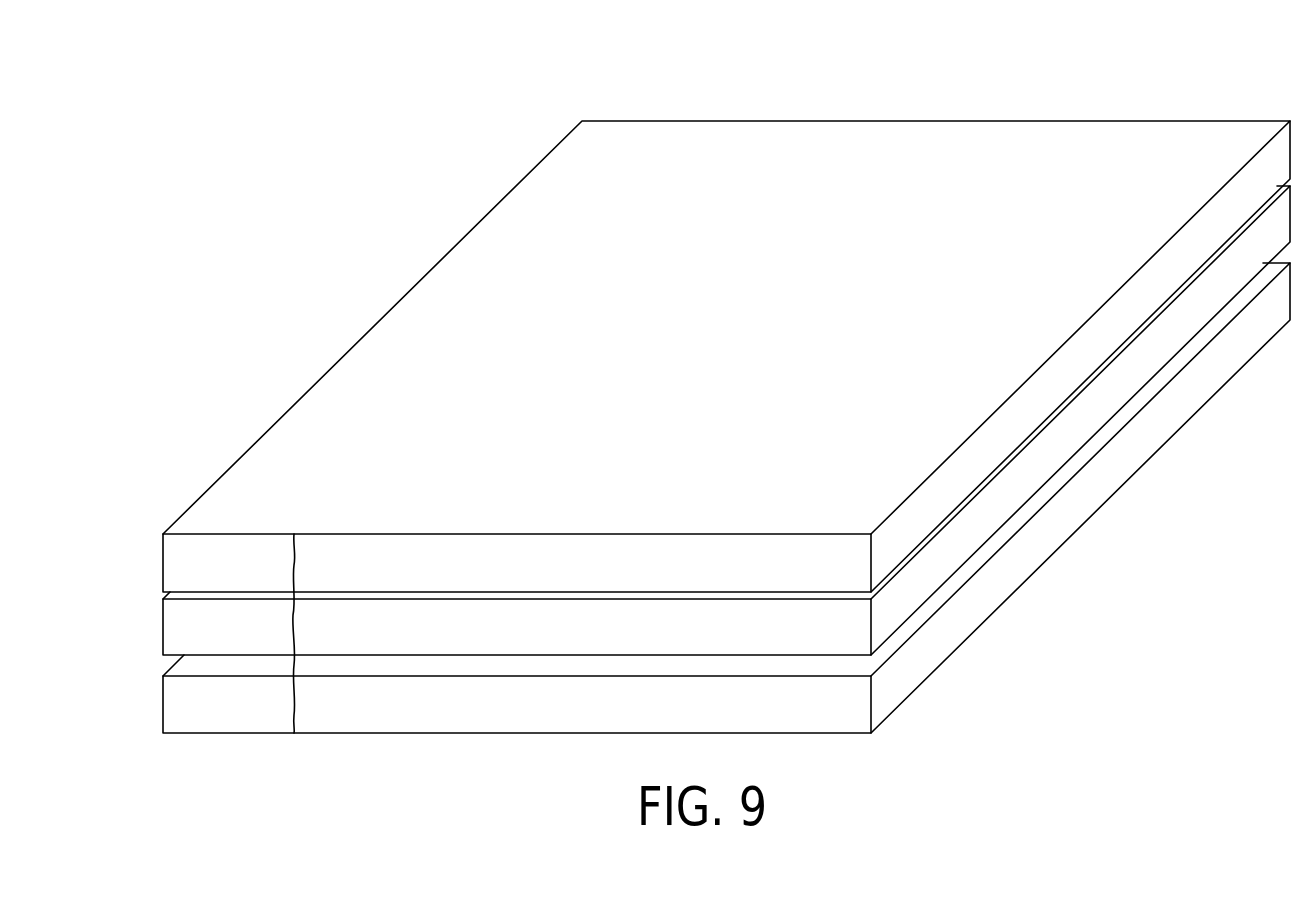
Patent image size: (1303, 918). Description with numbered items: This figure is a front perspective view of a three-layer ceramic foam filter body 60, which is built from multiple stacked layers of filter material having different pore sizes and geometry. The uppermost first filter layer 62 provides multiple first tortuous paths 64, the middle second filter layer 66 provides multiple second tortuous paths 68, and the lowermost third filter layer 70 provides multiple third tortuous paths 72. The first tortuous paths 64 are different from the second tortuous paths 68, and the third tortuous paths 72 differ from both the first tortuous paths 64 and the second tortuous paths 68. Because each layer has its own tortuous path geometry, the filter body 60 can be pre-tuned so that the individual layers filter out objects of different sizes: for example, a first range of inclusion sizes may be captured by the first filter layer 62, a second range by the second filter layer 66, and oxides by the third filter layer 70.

The filter body 60 is at (700, 394).
The first filter layer 62 is at (163, 561).
The first tortuous paths 64 is at (294, 563).
The second filter layer 66 is at (163, 627).
The second tortuous paths 68 is at (294, 628).
The third filter layer 70 is at (163, 703).
The third tortuous paths 72 is at (294, 703).